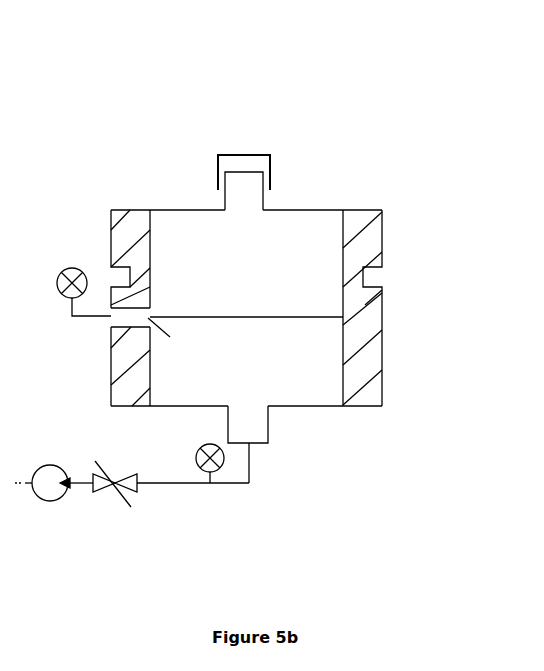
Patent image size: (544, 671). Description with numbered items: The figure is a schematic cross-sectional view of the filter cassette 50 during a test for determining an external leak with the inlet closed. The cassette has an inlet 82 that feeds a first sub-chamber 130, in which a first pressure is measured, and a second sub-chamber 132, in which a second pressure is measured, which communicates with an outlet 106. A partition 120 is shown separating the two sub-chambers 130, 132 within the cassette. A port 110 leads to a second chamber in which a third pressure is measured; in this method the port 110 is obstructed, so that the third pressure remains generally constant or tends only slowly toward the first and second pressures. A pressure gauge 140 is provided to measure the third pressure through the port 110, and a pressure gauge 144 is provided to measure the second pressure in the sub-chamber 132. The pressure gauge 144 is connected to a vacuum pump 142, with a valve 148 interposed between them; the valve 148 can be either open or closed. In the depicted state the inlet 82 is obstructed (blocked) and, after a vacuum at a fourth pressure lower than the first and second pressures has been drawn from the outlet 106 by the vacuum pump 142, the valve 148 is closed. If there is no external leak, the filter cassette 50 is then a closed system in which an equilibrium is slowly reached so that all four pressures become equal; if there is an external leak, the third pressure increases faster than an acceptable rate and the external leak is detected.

The filter cassette 50 is at (388, 30).
The inlet 82 is at (253, 203).
The sub-chamber 130 is at (318, 256).
The sub-chamber 132 is at (322, 361).
The filter membrane 120 is at (260, 317).
The outlet 106 is at (255, 413).
The port 110 is at (165, 332).
The pressure gauge 140 is at (57, 283).
The pressure gauge 144 is at (225, 460).
The vacuum pump 142 is at (56, 466).
The valve 148 is at (118, 471).